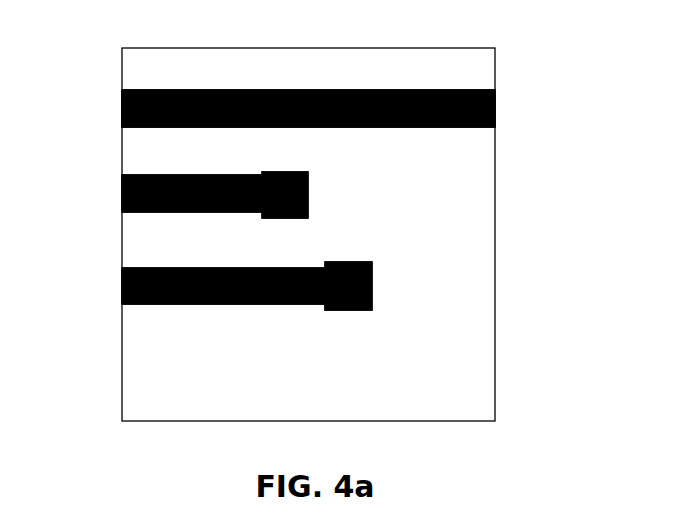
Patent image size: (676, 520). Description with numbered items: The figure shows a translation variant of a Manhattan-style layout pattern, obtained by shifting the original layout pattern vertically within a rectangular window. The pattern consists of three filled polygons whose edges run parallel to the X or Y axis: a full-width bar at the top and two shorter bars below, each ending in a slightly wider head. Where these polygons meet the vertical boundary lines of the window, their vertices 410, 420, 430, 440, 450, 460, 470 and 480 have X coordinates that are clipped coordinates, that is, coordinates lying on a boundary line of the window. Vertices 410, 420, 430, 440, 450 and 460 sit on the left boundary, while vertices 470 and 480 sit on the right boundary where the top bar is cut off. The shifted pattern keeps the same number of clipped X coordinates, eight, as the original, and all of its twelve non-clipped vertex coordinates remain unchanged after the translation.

The vertex 410 is at (109, 86).
The vertex 420 is at (107, 122).
The vertex 430 is at (107, 172).
The vertex 440 is at (107, 208).
The vertex 450 is at (107, 267).
The vertex 460 is at (108, 305).
The vertex 470 is at (508, 91).
The vertex 480 is at (506, 136).